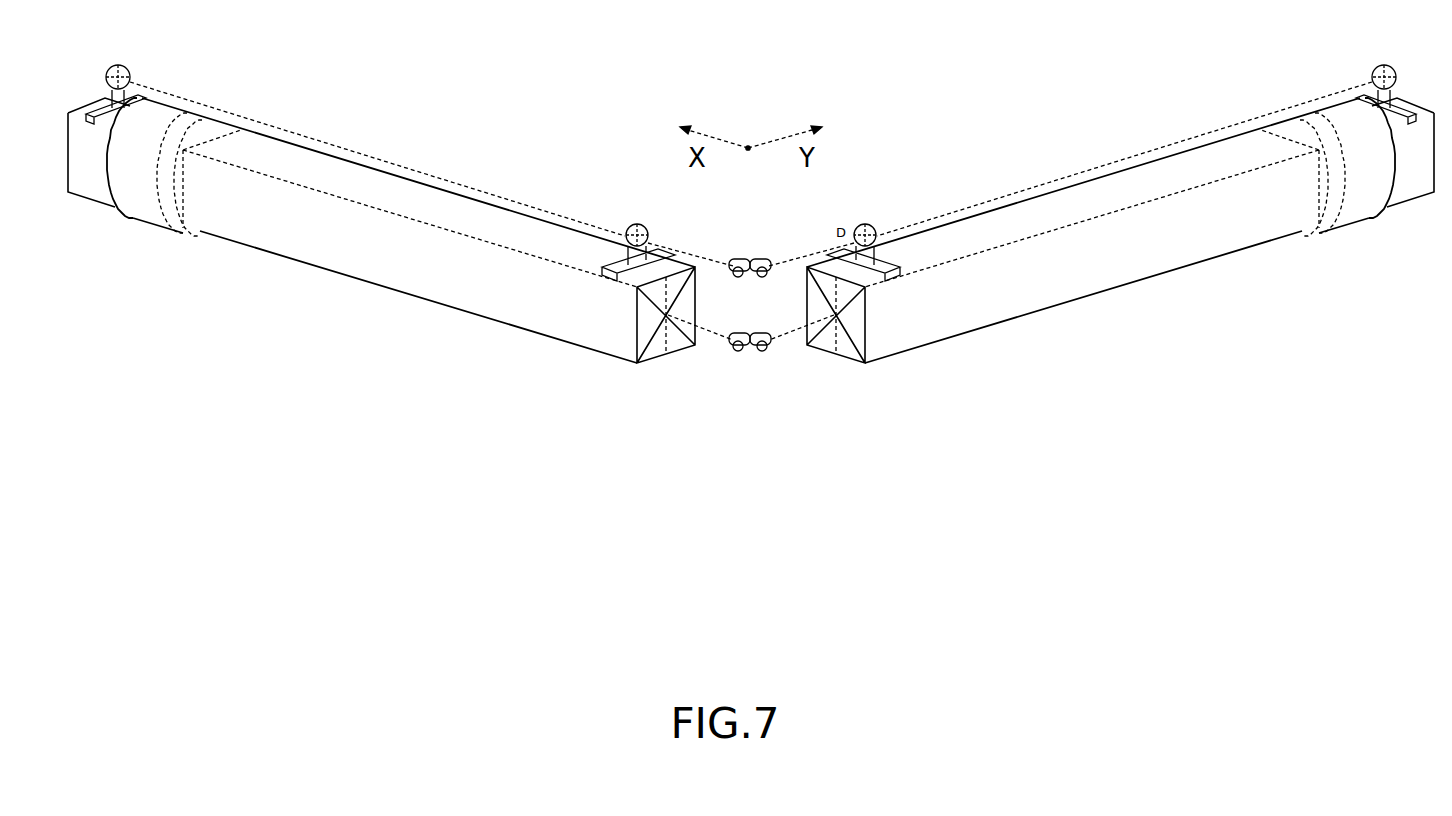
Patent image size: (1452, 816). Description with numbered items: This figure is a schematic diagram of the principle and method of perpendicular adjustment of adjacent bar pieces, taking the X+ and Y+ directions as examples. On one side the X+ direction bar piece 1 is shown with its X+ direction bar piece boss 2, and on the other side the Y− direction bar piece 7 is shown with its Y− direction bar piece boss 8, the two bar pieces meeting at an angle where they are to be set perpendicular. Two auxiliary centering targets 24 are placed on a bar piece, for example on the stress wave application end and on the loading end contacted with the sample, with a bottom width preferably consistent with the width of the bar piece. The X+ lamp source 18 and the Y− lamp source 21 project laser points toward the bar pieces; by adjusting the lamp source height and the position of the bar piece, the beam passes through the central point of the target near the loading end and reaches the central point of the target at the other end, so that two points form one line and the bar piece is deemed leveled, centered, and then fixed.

The X+ direction bar piece 1 is at (352, 258).
The X+ direction bar piece boss 2 is at (147, 202).
The Y− direction bar piece 7 is at (1133, 258).
The Y− direction bar piece boss 8 is at (1360, 193).
The X+ lamp source 18 is at (733, 350).
The Y− lamp source 21 is at (767, 348).
The auxiliary centering target 24 is at (633, 218).